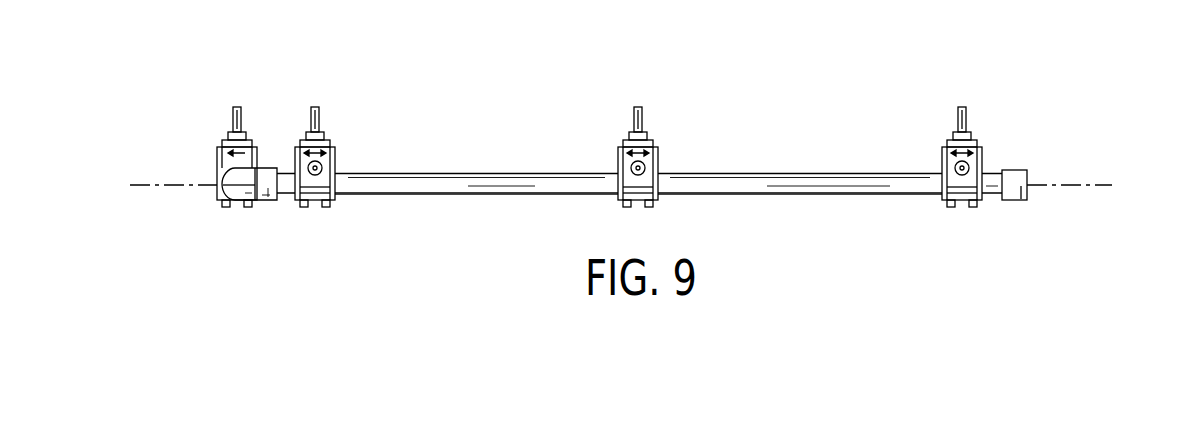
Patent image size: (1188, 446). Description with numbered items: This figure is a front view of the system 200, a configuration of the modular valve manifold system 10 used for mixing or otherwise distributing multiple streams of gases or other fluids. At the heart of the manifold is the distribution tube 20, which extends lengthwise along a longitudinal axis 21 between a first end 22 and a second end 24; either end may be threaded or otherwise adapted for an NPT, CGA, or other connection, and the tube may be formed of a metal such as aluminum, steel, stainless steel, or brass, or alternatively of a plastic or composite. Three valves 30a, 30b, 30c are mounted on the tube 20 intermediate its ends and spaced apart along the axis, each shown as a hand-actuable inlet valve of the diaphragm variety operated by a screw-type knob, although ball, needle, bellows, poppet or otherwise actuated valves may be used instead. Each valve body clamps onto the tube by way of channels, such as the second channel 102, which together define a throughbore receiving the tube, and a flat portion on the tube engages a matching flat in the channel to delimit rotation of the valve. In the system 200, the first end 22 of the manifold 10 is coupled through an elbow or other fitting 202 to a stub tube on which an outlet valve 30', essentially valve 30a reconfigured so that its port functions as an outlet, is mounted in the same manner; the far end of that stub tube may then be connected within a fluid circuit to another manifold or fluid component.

The system 200 is at (1070, 72).
The modular valve manifold system 10 is at (845, 144).
The distribution tube 20 is at (750, 163).
The longitudinal axis 21 is at (1072, 183).
The first end 22 is at (268, 168).
The second end 24 is at (1013, 170).
The outlet valve 30' is at (195, 193).
The valve 30a is at (350, 130).
The valve 30b is at (674, 132).
The valve 30c is at (988, 122).
The second channel 102 is at (610, 196).
The fitting 202 is at (237, 202).